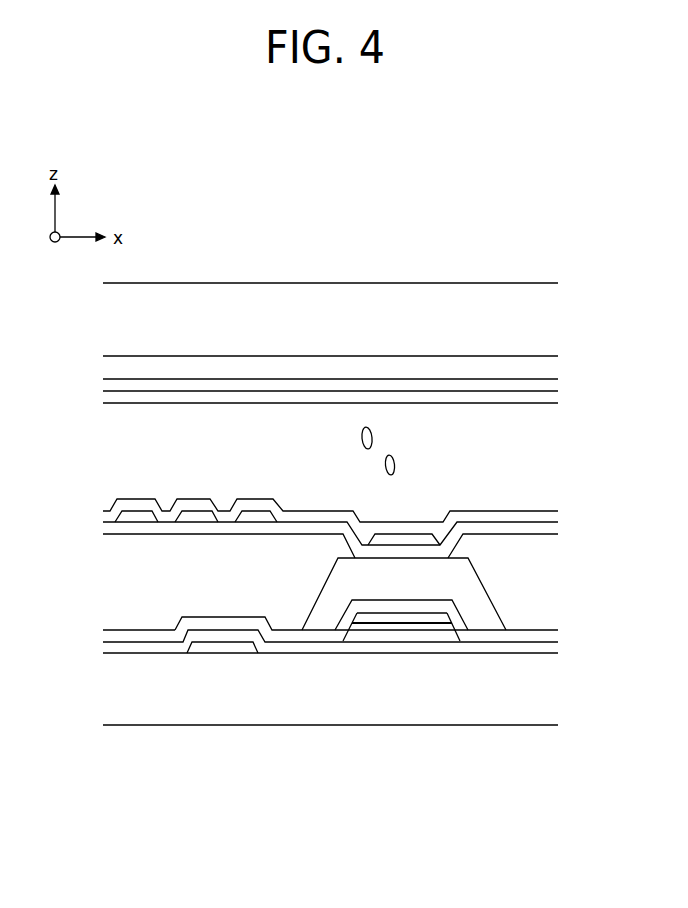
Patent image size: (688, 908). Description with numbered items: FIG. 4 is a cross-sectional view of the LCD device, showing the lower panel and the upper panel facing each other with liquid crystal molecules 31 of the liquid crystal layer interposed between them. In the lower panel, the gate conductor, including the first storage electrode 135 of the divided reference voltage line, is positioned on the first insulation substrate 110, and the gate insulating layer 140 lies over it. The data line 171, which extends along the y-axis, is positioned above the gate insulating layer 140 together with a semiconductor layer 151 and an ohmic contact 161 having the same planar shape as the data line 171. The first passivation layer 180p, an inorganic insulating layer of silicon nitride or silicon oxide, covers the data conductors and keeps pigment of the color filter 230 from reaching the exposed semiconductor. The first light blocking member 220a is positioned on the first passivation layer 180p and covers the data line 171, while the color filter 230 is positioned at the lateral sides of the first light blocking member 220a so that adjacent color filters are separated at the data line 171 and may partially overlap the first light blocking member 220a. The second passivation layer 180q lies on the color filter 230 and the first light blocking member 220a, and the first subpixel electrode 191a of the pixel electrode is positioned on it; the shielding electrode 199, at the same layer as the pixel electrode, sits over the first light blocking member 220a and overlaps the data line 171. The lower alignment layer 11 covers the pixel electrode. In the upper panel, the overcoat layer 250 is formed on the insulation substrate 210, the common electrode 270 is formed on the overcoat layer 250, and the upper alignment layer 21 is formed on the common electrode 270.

The lower alignment layer 11 is at (495, 518).
The upper alignment layer 21 is at (456, 398).
The liquid crystal molecules 31 is at (372, 437).
The first insulation substrate 110 is at (542, 700).
The first storage electrode 135 is at (222, 645).
The gate insulating layer 140 is at (277, 647).
The semiconductor layer 151 is at (382, 635).
The ohmic contact 161 is at (407, 627).
The data line 171 is at (430, 618).
The first passivation layer 180p is at (497, 637).
The second passivation layer 180q is at (310, 530).
The first subpixel electrode 191a is at (197, 518).
The shielding electrode 199 is at (418, 542).
The insulation substrate 210 is at (219, 296).
The first light blocking member 220a is at (322, 605).
The color filter 230 is at (140, 603).
The overcoat layer 250 is at (300, 365).
The common electrode 270 is at (379, 384).